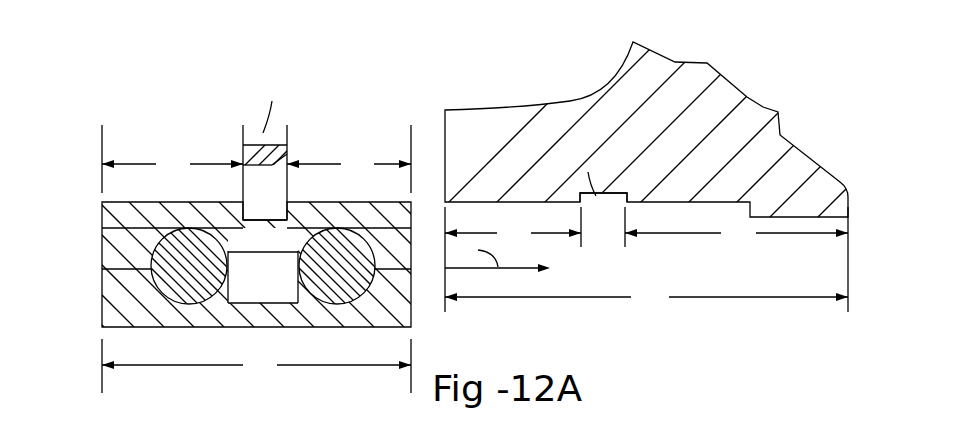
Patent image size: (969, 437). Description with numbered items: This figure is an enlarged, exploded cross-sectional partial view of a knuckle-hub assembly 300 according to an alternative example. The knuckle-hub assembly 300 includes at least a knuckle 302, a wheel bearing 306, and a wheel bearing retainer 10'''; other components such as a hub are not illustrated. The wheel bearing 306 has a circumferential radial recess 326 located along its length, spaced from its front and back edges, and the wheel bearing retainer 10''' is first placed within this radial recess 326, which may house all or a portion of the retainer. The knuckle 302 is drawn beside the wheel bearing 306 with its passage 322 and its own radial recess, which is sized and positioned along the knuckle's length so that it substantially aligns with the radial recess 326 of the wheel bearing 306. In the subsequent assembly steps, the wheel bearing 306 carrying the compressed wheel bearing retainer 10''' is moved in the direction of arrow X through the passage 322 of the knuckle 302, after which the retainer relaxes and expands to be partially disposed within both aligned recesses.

The knuckle-hub assembly 300 is at (484, 205).
The wheel bearing retainer 10''' is at (239, 119).
The knuckle 302 is at (750, 92).
The wheel bearing 306 is at (135, 202).
The passage 322 is at (612, 198).
The radial recess 326 is at (275, 219).